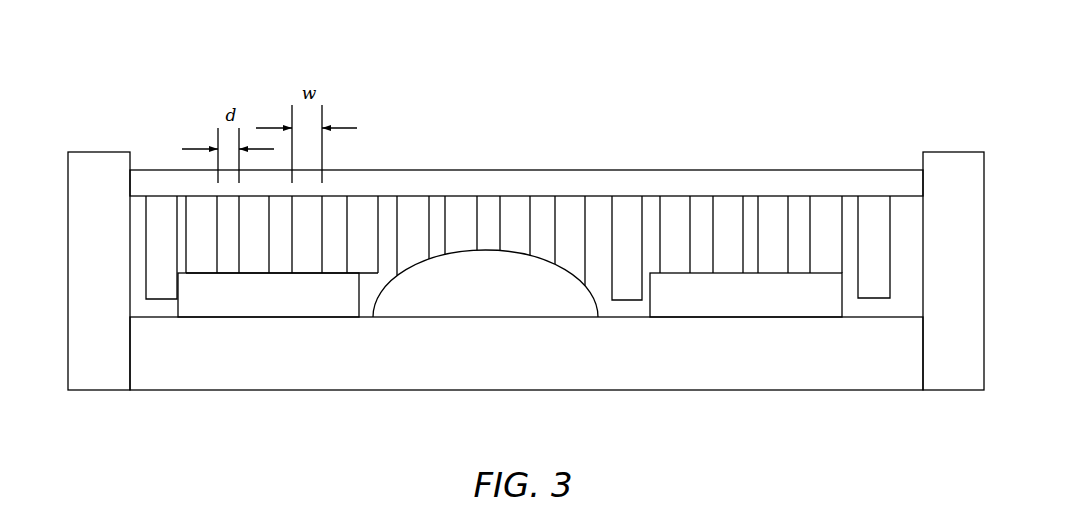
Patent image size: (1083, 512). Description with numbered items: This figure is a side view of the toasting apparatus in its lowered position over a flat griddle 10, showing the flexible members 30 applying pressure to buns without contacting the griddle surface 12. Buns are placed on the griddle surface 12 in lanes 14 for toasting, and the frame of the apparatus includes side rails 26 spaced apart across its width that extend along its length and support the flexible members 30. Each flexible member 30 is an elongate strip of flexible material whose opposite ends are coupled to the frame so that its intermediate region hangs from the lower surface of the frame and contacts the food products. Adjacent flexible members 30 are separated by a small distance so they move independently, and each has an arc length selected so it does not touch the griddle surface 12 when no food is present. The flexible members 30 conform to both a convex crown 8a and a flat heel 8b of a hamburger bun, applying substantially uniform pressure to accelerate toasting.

The flat griddle 10 is at (838, 410).
The griddle surface 12 is at (893, 315).
The lanes 14 is at (872, 313).
The side rails 26 is at (792, 168).
The flexible members 30 is at (167, 212).
The crown 8a is at (506, 278).
The heel 8b is at (252, 298).